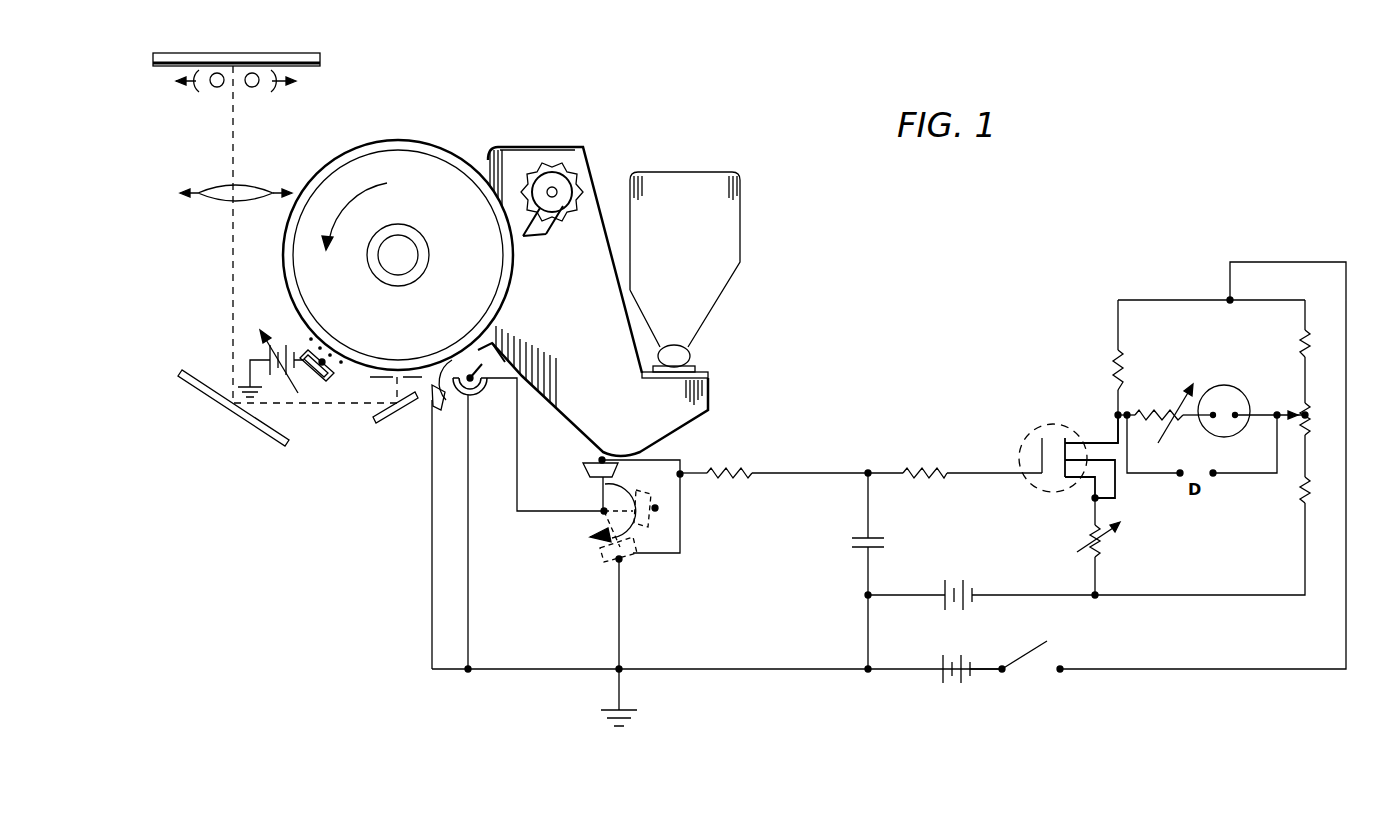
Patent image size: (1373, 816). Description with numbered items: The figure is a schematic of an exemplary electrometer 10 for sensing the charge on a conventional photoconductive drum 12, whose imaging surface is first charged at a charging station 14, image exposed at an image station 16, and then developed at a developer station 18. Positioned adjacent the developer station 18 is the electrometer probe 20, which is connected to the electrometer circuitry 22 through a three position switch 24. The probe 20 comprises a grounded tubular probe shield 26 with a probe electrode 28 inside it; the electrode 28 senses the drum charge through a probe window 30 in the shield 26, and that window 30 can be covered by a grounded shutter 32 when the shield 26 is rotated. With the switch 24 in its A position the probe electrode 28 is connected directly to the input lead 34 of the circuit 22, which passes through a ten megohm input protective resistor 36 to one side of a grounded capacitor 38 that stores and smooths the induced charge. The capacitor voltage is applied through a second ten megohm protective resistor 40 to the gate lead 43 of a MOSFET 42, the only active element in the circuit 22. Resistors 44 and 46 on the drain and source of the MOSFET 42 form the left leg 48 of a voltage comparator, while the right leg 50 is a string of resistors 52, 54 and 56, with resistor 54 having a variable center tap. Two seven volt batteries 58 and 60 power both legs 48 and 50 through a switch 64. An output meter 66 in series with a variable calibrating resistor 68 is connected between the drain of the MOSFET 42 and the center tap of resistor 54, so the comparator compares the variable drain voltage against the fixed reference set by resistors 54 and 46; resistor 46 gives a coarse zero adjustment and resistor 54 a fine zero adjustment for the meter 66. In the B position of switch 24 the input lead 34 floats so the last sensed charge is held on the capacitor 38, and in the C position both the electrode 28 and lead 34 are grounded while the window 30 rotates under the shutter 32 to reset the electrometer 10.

The electrometer 10 is at (784, 243).
The photoconductive drum 12 is at (352, 150).
The charging station 14 is at (296, 338).
The image station 16 is at (360, 394).
The developer station 18 is at (495, 150).
The electrometer probe 20 is at (455, 412).
The electrometer circuitry 22 is at (984, 352).
The three position switch 24 is at (596, 507).
The probe shield 26 is at (480, 388).
The probe electrode 28 is at (530, 366).
The probe window 30 is at (500, 340).
The shutter 32 is at (432, 402).
The input lead 34 is at (682, 472).
The input protective resistor 36 is at (748, 468).
The capacitor 38 is at (874, 540).
The resistor 40 is at (912, 468).
The MOSFET 42 is at (1028, 432).
The gate lead 43 is at (994, 470).
The resistor 44 is at (1122, 378).
The variable resistor 46 is at (1106, 552).
The left leg 48 is at (1116, 320).
The right leg 50 is at (1310, 316).
The resistor 52 is at (1302, 330).
The resistor 54 is at (1310, 430).
The resistor 56 is at (1300, 486).
The battery 58 is at (960, 578).
The battery 60 is at (947, 655).
The switch 64 is at (1036, 652).
The output meter 66 is at (1244, 388).
The variable calibrating resistor 68 is at (1150, 396).